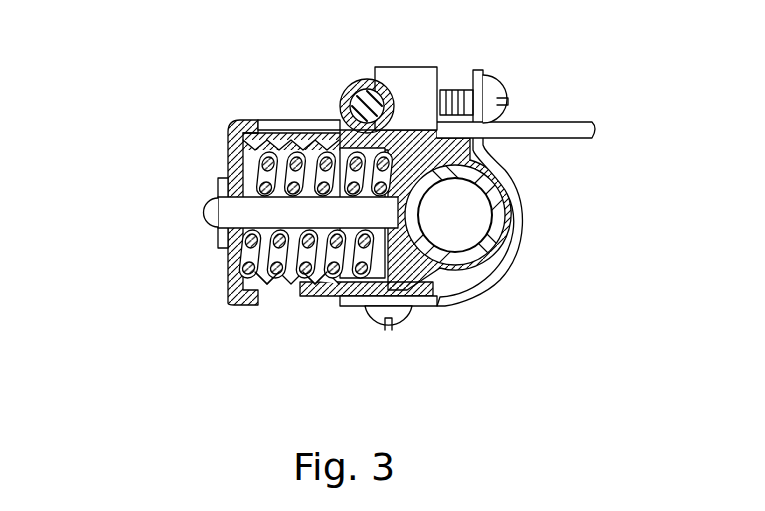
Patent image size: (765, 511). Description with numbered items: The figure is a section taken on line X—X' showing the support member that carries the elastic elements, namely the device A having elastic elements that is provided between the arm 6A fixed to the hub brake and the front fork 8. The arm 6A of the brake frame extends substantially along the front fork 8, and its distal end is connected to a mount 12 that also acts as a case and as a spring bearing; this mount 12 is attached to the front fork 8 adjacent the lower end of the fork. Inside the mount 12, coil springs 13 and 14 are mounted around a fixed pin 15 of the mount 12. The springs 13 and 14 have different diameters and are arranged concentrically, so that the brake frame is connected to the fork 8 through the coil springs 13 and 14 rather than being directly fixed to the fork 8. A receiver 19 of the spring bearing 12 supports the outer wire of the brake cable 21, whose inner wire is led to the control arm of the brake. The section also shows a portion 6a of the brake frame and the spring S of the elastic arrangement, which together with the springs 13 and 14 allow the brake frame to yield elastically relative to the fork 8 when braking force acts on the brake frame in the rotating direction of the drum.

The housing 6a is at (237, 125).
The spring S is at (244, 168).
The receiver 19 is at (346, 93).
The brake cable 21 is at (376, 92).
The arm 6A is at (566, 124).
The fixed pin 15 is at (405, 213).
The front fork 8 is at (508, 224).
The mount 12 is at (430, 293).
The coil spring 13 is at (305, 262).
The coil spring 14 is at (296, 264).
The device having elastic elements A is at (168, 271).